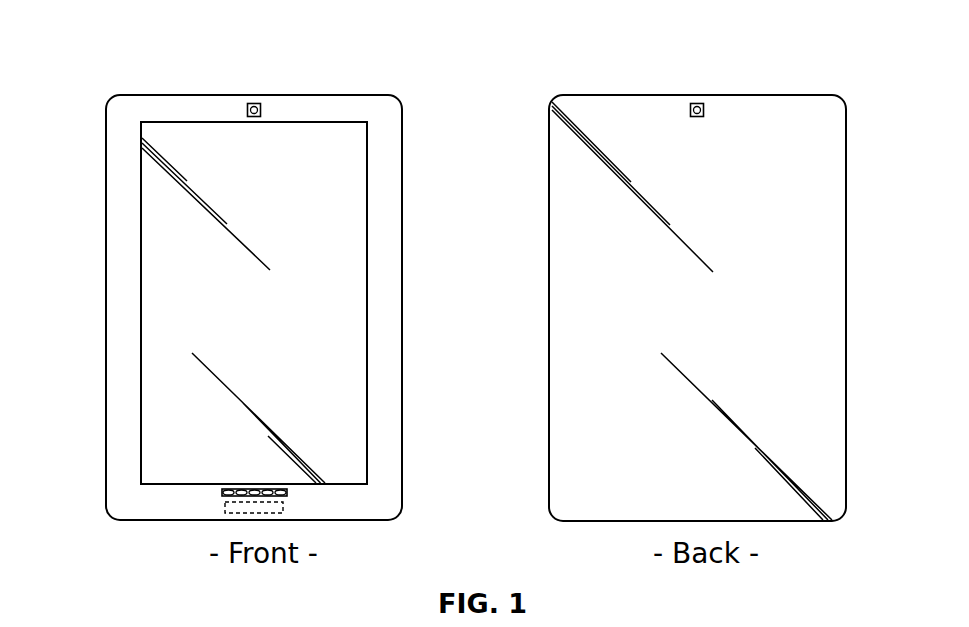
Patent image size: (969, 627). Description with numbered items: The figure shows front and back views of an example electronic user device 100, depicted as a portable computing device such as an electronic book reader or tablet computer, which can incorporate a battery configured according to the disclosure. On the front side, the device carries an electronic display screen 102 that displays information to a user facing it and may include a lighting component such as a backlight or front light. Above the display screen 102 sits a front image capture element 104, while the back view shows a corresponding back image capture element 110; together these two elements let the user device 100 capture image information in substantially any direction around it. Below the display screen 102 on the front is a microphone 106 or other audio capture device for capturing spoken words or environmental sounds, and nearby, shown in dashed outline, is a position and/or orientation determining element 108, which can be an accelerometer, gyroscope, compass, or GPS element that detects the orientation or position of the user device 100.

The electronic user device 100 is at (126, 46).
The electronic display screen 102 is at (368, 221).
The front image capture element 104 is at (262, 109).
The microphone 106 is at (223, 493).
The position and/or orientation determining element 108 is at (283, 503).
The back image capture element 110 is at (697, 117).